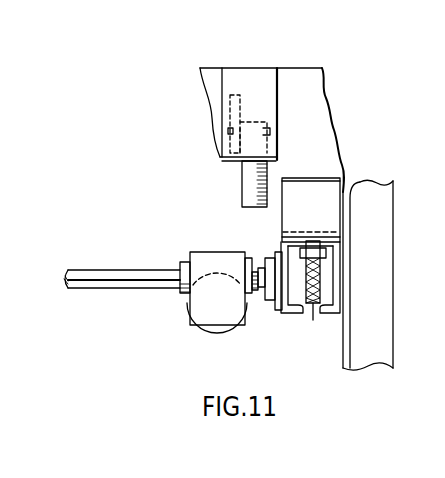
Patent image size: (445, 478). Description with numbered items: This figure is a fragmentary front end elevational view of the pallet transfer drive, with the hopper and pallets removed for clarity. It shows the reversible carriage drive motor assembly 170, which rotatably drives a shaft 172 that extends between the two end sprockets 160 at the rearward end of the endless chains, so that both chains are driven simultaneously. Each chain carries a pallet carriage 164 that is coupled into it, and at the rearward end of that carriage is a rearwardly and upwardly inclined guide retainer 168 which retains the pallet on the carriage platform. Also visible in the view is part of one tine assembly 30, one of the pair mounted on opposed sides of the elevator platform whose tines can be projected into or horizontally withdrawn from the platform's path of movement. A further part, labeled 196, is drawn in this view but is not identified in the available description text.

The tine assembly 30 is at (308, 85).
The end sprocket 160 is at (313, 317).
The pallet carriage 164 is at (313, 237).
The guide retainer 168 is at (313, 214).
The carriage drive motor assembly 170 is at (213, 331).
The shaft 172 is at (133, 280).
The neck shaft 196 is at (248, 182).